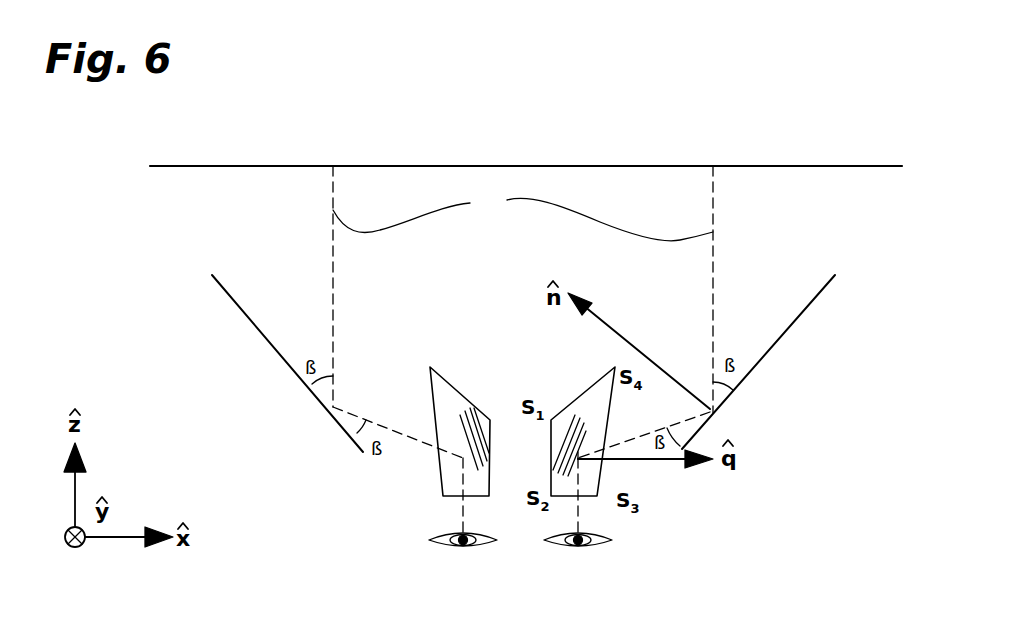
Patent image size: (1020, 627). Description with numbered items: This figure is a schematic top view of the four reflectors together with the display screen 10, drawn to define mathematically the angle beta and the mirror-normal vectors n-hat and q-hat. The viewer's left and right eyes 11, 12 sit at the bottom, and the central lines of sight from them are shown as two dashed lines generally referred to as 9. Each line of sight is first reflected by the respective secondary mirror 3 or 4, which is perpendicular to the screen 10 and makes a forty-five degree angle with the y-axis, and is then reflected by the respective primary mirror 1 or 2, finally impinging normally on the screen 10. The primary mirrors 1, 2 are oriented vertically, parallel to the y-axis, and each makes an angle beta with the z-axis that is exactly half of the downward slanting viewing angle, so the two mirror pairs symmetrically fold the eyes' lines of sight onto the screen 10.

The primary mirror 1 is at (280, 352).
The primary mirror 2 is at (768, 352).
The secondary mirror 3 is at (452, 430).
The secondary mirror 4 is at (592, 430).
The central lines of sight 9 is at (523, 219).
The screen 10 is at (614, 166).
The left eye 11 is at (443, 542).
The right eye 12 is at (598, 542).